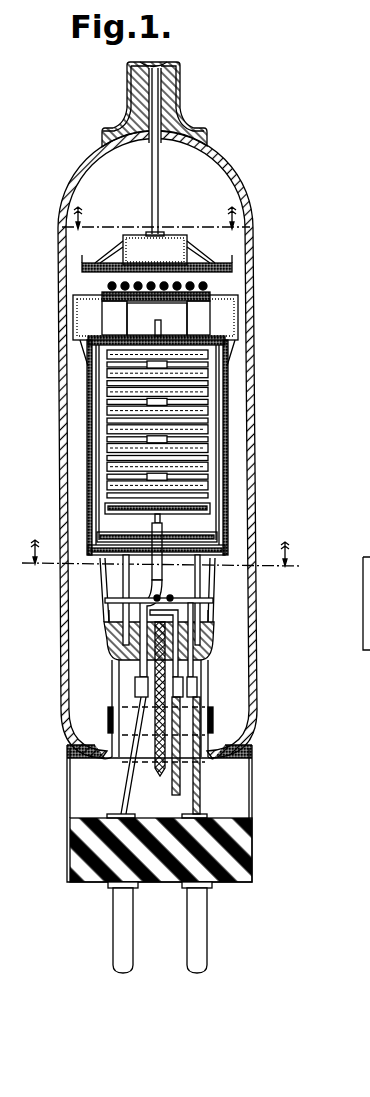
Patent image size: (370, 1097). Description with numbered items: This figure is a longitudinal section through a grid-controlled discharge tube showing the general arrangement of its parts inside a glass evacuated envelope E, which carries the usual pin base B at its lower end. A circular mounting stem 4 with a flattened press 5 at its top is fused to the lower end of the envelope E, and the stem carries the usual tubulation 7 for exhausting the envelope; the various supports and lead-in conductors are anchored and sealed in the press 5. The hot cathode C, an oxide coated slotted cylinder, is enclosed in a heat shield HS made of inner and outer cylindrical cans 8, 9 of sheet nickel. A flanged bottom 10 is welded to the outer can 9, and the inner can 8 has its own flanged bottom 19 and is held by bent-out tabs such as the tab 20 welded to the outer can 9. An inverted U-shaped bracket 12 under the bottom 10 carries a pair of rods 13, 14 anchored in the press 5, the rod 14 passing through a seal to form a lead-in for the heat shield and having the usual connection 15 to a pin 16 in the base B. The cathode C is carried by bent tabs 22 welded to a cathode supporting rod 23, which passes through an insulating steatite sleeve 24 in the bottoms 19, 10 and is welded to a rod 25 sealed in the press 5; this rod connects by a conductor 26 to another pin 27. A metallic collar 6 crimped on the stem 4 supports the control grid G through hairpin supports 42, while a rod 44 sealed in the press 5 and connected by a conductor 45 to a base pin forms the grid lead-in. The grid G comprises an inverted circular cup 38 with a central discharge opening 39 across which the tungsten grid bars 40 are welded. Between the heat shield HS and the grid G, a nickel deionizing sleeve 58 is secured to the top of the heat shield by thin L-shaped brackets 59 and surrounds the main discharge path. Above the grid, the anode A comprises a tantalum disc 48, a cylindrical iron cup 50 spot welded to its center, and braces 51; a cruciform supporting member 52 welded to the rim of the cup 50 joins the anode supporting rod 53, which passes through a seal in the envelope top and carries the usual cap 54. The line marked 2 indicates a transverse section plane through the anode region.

The cap 54 is at (178, 95).
The glass evacuated envelope E is at (223, 166).
The anode supporting rod 53 is at (162, 168).
The cruciform supporting member 52 is at (160, 232).
The section line 2- 2 is at (156, 227).
The braces 51 is at (113, 254).
The cylindrical cup 50 is at (155, 250).
The anode A is at (222, 263).
The disc 48 is at (86, 261).
The grid bars 40 is at (108, 287).
The inverted circular cup 38 is at (76, 326).
The central discharge opening 39 is at (118, 311).
The L-shaped brackets 59 is at (160, 333).
The sleeve 58 is at (171, 318).
The control grid G is at (240, 323).
The tab 20 is at (230, 356).
The heat shield HS is at (88, 436).
The inner heat shield can 8 is at (226, 449).
The outer heat shield can 9 is at (229, 491).
The hot cathode C is at (205, 411).
The bent strips or tabs 22 is at (161, 521).
The cathode supporting rod 23 is at (161, 519).
The tube or sleeve 24 is at (152, 527).
The flanged bottom 19 is at (108, 534).
The flanged bottom 10 is at (212, 557).
The circular mounting stem 4 is at (161, 663).
The flattened press 5 is at (112, 645).
The bracket 12 is at (122, 580).
The rod 13 is at (138, 612).
The rod 14 is at (196, 614).
The tubulation 7 is at (155, 764).
The rod 25 is at (138, 672).
The rod 44 is at (183, 672).
The hairpin supports 42 is at (211, 648).
The metallic band or collar 6 is at (214, 719).
The pin base B is at (68, 819).
The conductor 26 is at (123, 790).
The conductor 45 is at (172, 790).
The connection 15 is at (201, 802).
The pin 27 is at (128, 939).
The pin 16 is at (202, 939).